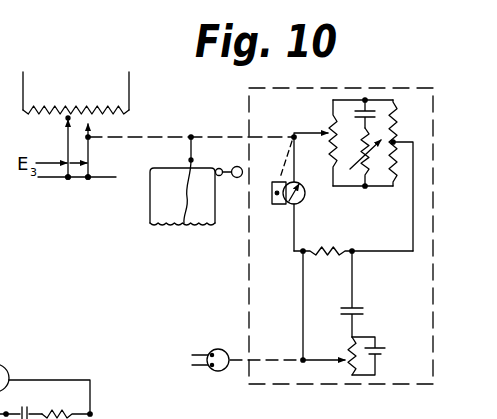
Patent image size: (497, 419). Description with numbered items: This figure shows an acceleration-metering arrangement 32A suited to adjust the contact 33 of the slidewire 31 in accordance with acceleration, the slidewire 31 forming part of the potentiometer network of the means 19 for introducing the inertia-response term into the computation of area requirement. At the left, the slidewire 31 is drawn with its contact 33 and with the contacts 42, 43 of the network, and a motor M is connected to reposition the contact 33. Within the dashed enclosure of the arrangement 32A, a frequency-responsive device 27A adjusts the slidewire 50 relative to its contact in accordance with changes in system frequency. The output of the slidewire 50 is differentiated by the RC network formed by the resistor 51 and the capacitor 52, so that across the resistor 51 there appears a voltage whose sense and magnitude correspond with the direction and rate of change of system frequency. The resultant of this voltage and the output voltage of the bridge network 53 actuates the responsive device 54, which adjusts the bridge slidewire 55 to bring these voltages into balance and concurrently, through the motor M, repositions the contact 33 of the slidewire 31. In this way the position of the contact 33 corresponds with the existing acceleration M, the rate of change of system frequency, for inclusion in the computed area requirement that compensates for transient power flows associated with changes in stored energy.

The means for introducing the inertia-response term 19 is at (113, 67).
The slidewire 31 is at (46, 108).
The contact 33 is at (90, 136).
The contact 42 is at (67, 179).
The contact 43 is at (89, 179).
The rate of change of system frequency M is at (196, 193).
The frequency-meter 27A is at (213, 351).
The acceleration-metering arrangement 32A is at (434, 274).
The slidewire 50 is at (350, 371).
The resistor 51 is at (333, 254).
The capacitor 52 is at (363, 311).
The bridge network 53 is at (357, 185).
The responsive device 54 is at (305, 199).
The bridge slidewire 55 is at (328, 150).